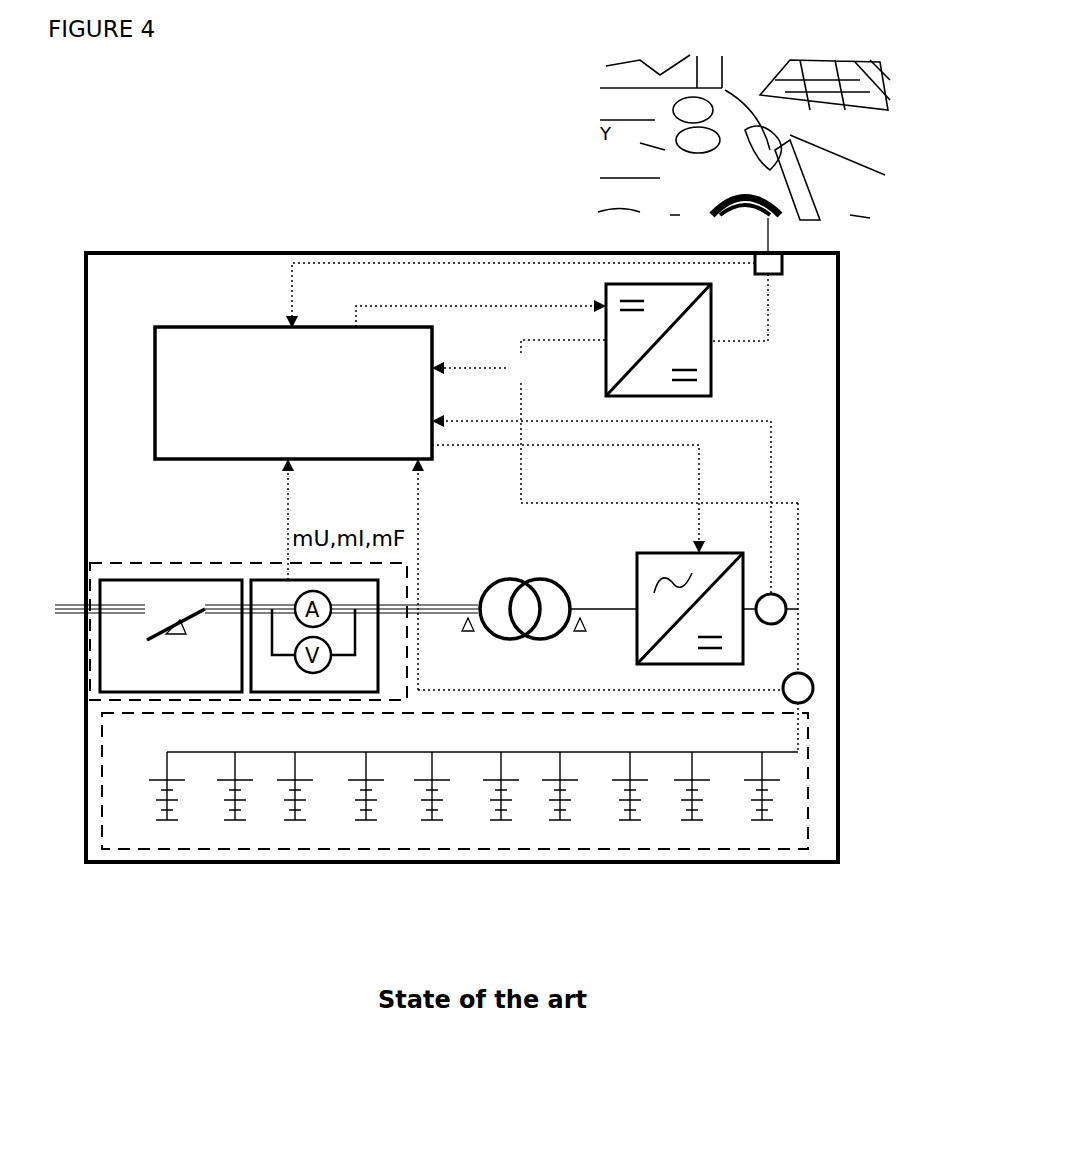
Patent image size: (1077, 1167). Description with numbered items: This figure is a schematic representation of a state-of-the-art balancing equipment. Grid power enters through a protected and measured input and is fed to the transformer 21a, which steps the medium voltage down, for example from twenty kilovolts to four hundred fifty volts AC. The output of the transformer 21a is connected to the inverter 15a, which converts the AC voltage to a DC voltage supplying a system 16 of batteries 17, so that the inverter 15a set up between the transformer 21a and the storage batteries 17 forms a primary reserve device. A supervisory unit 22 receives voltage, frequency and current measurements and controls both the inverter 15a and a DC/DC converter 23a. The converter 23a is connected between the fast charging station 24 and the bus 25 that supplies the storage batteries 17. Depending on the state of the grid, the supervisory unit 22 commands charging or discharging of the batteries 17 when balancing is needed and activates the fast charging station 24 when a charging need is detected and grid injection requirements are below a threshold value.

The supervisory unit 22 is at (293, 393).
The fast charging station 24 is at (780, 276).
The DC/DC converter 23a is at (711, 352).
The transformer 21a is at (508, 566).
The inverter 15a is at (637, 652).
The bus 25 is at (800, 731).
The battery 17 is at (172, 822).
The system of batteries 16 is at (455, 829).